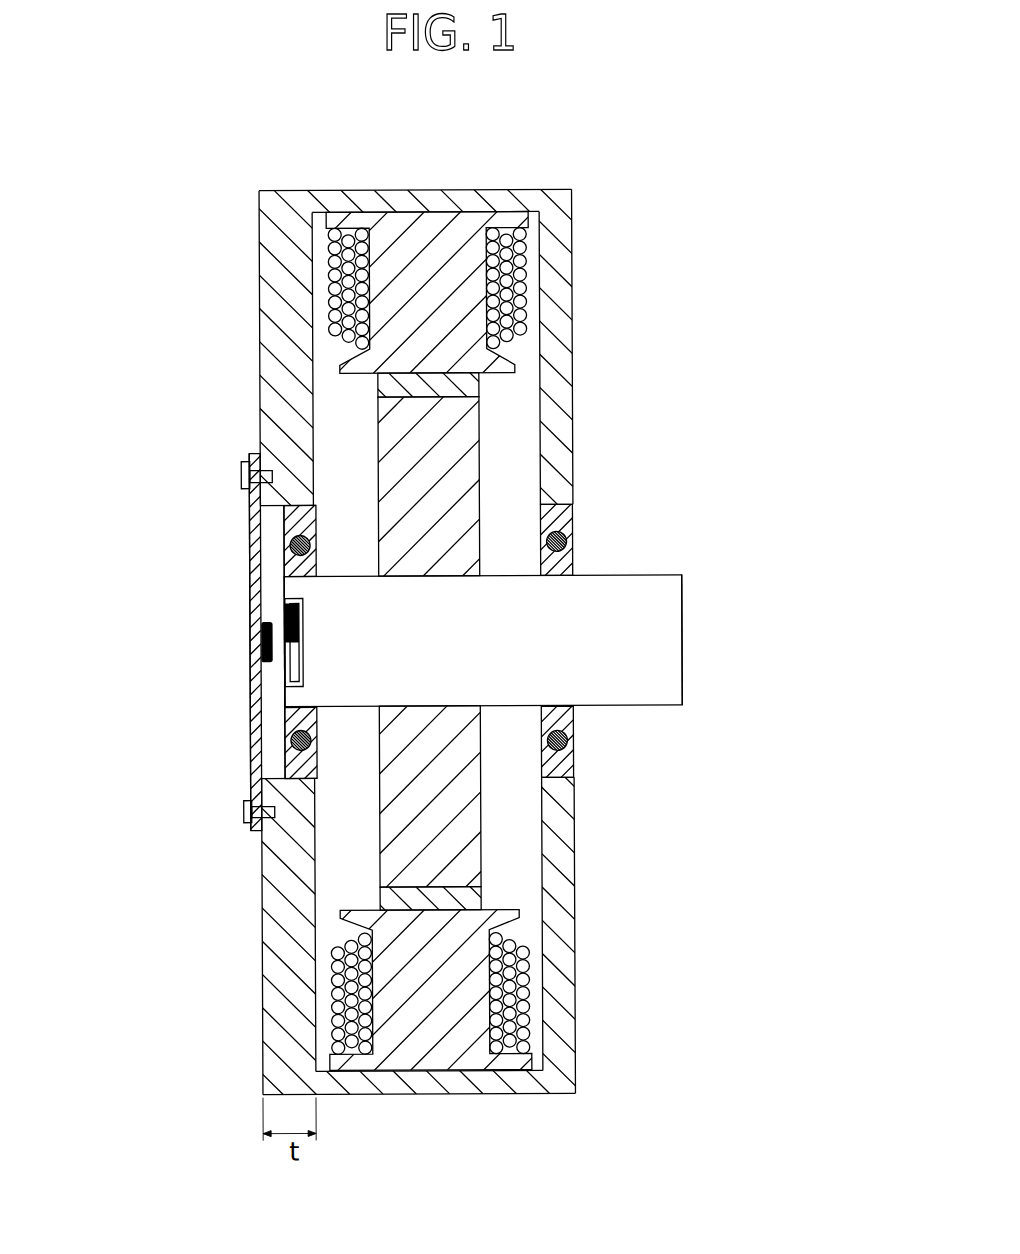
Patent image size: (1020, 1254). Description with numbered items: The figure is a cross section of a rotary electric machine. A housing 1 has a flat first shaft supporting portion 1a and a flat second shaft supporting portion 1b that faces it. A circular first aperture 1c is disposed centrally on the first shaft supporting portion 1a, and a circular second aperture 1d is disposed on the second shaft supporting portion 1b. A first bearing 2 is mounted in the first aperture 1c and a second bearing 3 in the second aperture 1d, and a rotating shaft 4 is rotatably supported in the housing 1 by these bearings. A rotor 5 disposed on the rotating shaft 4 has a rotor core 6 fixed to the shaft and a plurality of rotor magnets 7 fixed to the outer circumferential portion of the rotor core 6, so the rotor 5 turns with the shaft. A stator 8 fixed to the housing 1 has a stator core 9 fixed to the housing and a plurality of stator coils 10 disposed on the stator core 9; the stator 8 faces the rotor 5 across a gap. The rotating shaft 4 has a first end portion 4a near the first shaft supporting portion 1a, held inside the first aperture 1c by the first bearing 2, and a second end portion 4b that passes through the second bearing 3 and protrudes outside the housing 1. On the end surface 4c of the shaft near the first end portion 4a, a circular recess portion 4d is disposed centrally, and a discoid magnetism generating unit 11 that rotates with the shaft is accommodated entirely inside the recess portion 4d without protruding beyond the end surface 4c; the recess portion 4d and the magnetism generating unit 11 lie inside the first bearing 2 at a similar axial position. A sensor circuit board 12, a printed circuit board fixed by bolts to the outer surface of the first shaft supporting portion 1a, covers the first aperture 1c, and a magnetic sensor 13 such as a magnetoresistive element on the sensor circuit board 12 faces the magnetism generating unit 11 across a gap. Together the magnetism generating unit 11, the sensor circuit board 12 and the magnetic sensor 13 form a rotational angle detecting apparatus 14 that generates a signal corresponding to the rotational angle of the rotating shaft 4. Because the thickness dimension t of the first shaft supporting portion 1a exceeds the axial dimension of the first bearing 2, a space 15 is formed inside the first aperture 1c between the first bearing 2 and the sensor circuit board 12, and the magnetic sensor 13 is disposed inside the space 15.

The housing 1 is at (575, 798).
The first shaft supporting portion 1a is at (275, 965).
The second shaft supporting portion 1b is at (563, 888).
The first aperture 1c is at (247, 480).
The second aperture 1d is at (553, 498).
The first bearing 2 is at (285, 760).
The second bearing 3 is at (573, 533).
The rotating shaft 4 is at (628, 608).
The first end portion 4a is at (285, 703).
The second end portion 4b is at (677, 683).
The end surface 4c is at (283, 695).
The recess portion 4d is at (262, 593).
The rotor 5 is at (386, 595).
The rotor core 6 is at (387, 468).
The rotor magnets 7 is at (373, 380).
The stator 8 is at (435, 566).
The stator core 9 is at (432, 220).
The stator coils 10 is at (527, 283).
The magnetism generating unit 11 is at (283, 668).
The sensor circuit board 12 is at (248, 587).
The magnetic sensor 13 is at (262, 631).
The rotational angle detecting apparatus 14 is at (178, 643).
The space 15 is at (250, 570).